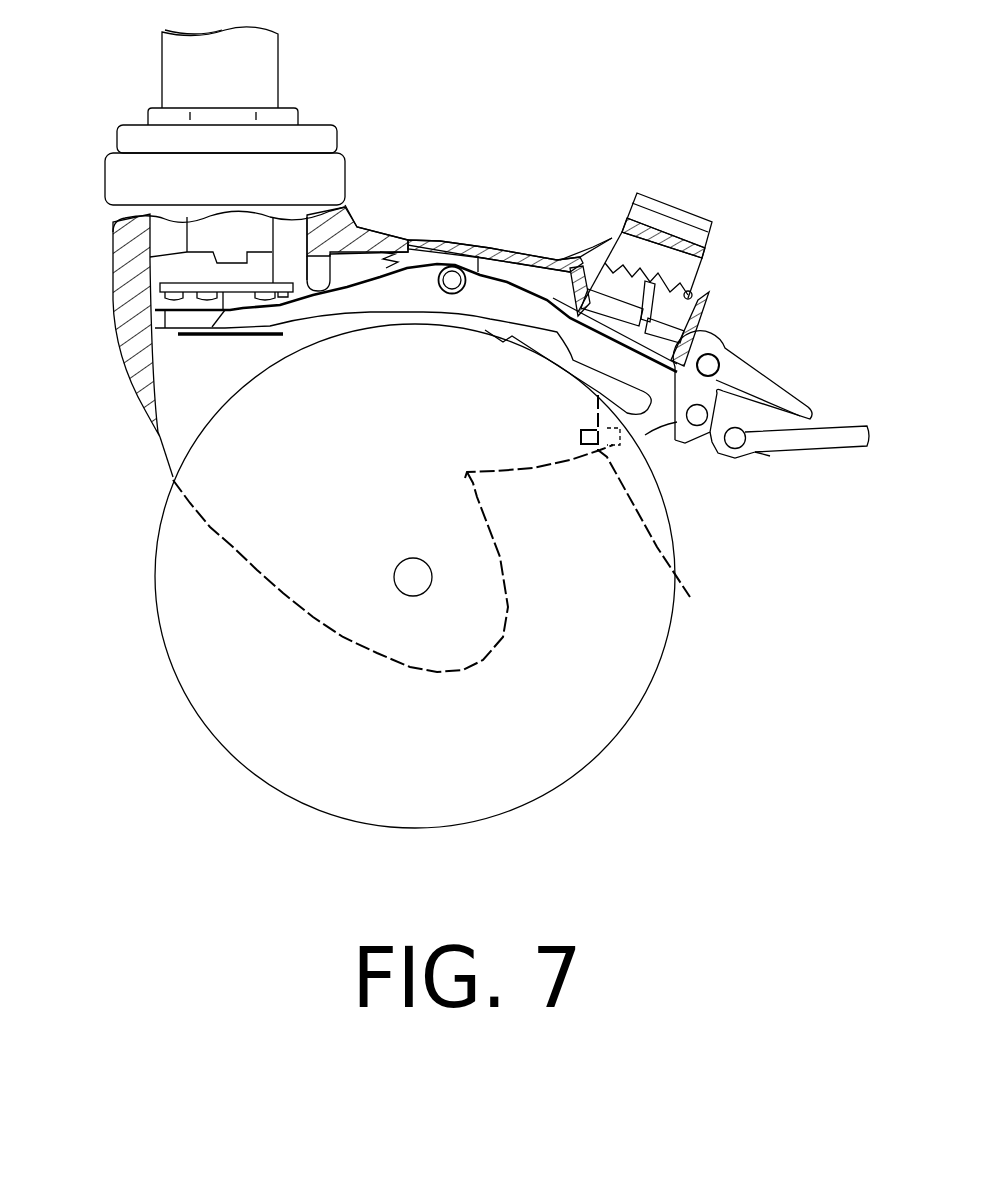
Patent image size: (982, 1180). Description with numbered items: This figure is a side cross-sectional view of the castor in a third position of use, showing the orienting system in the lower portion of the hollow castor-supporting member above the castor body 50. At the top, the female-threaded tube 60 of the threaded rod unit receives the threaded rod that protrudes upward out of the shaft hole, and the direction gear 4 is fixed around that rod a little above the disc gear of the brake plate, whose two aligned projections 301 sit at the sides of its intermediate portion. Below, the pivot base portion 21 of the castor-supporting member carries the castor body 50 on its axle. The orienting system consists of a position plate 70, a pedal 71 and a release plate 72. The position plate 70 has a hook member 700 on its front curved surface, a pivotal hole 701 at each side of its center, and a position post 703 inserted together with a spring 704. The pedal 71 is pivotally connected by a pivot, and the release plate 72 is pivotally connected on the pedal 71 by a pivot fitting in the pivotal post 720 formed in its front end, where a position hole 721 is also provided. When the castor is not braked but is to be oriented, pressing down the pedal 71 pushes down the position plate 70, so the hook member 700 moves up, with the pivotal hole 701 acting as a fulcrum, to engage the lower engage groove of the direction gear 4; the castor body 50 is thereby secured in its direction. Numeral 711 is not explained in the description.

The female-threaded tube 60 is at (253, 57).
The direction gear 4 is at (200, 260).
The hook member 700 is at (198, 340).
The position plate 70 is at (235, 340).
The pivot base portion 21 is at (230, 543).
The projections 301 is at (452, 280).
The pivotal hole 701 is at (478, 272).
The pivotal post 720 is at (713, 366).
The release plate 72 is at (797, 400).
The pedal 71 is at (853, 430).
The pedal arm 711 is at (760, 453).
The position hole 721 is at (713, 453).
The spring 704 is at (643, 450).
The position post 703 is at (674, 512).
The castor body 50 is at (637, 653).